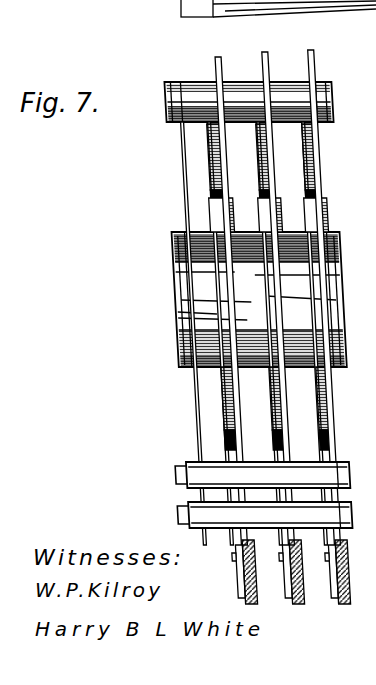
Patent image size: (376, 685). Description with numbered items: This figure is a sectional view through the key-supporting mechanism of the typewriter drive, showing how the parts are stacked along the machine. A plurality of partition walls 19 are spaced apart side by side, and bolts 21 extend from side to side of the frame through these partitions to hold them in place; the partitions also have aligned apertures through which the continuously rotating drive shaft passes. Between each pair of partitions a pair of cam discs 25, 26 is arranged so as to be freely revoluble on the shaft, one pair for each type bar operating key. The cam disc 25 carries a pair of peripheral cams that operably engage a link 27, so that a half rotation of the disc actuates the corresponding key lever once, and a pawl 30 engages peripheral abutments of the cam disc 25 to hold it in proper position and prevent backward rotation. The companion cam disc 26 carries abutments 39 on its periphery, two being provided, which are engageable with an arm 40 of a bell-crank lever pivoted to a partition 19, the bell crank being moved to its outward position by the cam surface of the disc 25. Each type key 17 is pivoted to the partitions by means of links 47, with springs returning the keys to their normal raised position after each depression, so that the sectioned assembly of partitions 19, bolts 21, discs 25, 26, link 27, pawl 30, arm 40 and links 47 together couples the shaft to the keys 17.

The type key 17 is at (294, 603).
The partition wall 19 is at (238, 333).
The bolt 21 is at (182, 472).
The cam disc 25 is at (235, 213).
The cam disc 26 is at (275, 267).
The link 27 is at (222, 62).
The pawl 30 is at (258, 163).
The abutment 39 is at (183, 312).
The arm of bell-crank lever 40 is at (190, 347).
The link 47 is at (248, 540).